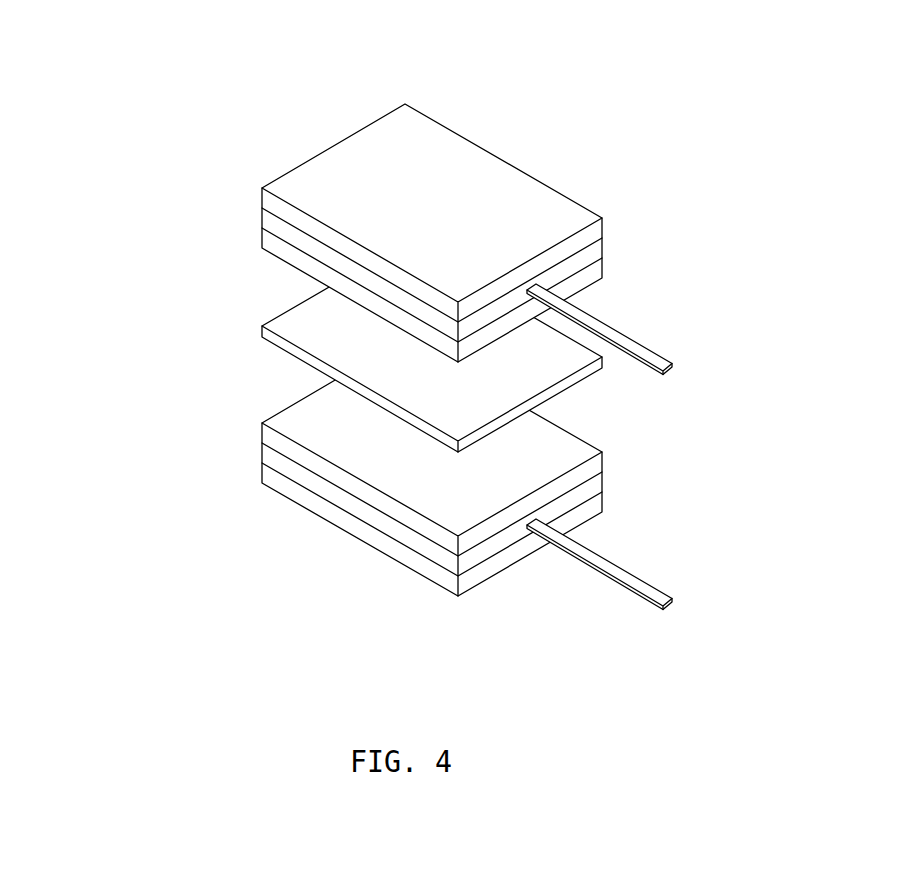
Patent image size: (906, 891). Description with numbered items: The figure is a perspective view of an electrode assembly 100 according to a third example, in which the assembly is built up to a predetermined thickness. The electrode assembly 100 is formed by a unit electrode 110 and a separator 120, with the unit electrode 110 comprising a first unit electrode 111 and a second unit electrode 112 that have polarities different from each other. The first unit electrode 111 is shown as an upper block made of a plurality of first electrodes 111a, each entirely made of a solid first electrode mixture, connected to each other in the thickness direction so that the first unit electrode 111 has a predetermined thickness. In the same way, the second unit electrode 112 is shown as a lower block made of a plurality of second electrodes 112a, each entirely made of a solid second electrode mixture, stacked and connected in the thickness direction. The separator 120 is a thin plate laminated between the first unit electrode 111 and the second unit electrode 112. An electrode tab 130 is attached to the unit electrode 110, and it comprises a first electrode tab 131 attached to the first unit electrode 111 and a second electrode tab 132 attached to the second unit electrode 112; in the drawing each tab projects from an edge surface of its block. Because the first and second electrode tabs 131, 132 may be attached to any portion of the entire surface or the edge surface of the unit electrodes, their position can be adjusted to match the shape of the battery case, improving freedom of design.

The electrode assembly 100 is at (320, 57).
The unit electrode 110 is at (87, 223).
The first unit electrode 111 is at (140, 180).
The first electrode 111a is at (267, 201).
The separator 120 is at (263, 330).
The second unit electrode 112 is at (140, 432).
The second electrode 112a is at (267, 438).
The electrode tab 130 is at (737, 443).
The first electrode tab 131 is at (663, 372).
The second electrode tab 132 is at (653, 592).